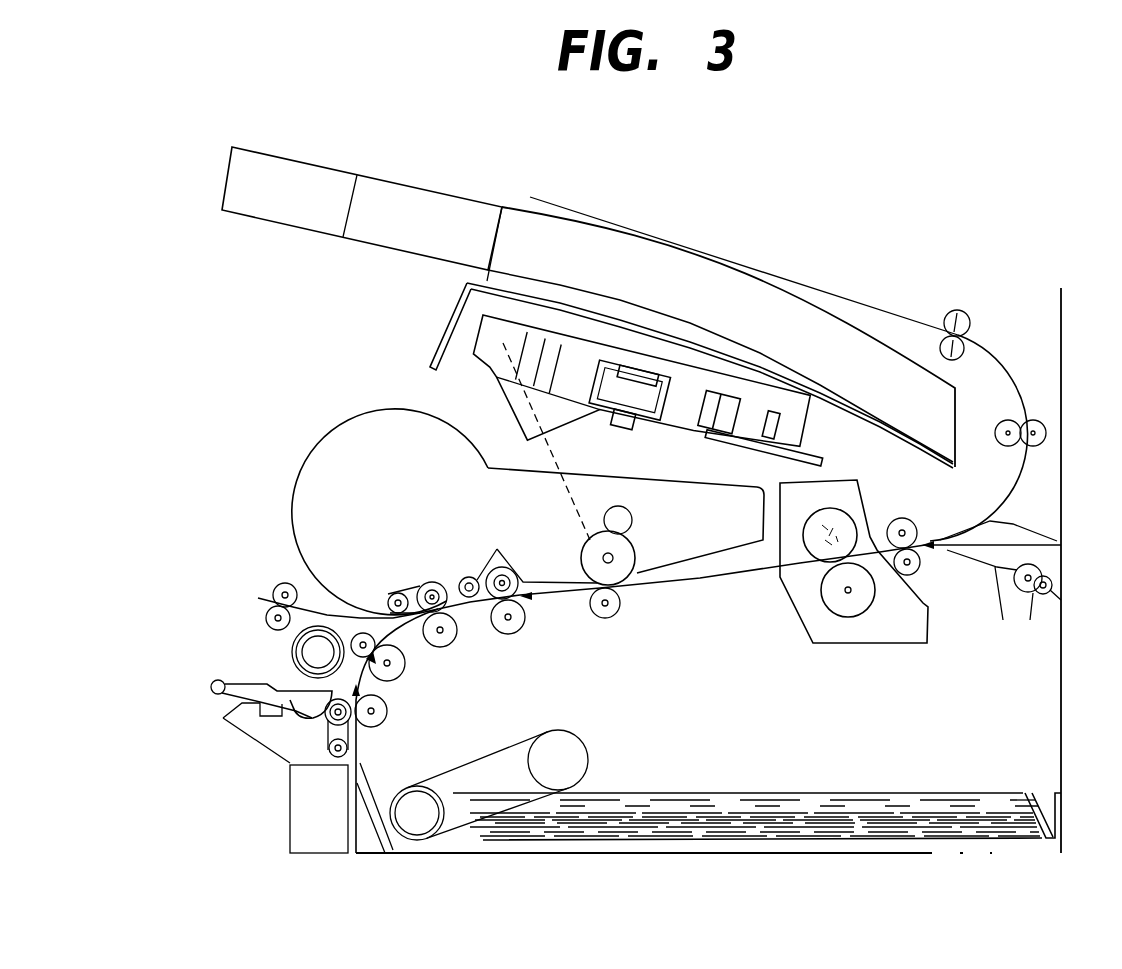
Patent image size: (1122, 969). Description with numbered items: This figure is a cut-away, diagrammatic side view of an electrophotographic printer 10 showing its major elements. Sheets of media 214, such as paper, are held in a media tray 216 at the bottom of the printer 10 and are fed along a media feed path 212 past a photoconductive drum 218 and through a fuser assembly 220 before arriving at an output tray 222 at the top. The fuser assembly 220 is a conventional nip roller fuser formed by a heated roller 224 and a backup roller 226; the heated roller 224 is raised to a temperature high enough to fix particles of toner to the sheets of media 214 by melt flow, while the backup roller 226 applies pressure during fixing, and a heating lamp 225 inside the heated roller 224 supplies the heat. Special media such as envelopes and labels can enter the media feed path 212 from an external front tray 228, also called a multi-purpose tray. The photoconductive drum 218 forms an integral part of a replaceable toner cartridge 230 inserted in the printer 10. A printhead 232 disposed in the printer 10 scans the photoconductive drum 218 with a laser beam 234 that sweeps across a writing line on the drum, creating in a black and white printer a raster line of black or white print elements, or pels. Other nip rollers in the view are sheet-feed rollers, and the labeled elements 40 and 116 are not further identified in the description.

The printer 10 is at (673, 178).
The feed roller 40 is at (390, 712).
The toner cartridge 116 is at (653, 373).
The media feed path 212 is at (662, 680).
The sheets of media 214 is at (772, 813).
The media tray 216 is at (1040, 788).
The photoconductive drum 218 is at (630, 590).
The fuser assembly 220 is at (933, 640).
The output tray 222 is at (337, 178).
The heated roller 224 is at (850, 512).
The heating lamp 225 is at (846, 533).
The backup roller 226 is at (829, 610).
The front tray 228 is at (212, 704).
The replaceable toner cartridge 230 is at (347, 412).
The printhead 232 is at (810, 415).
The laser beam 234 is at (565, 490).